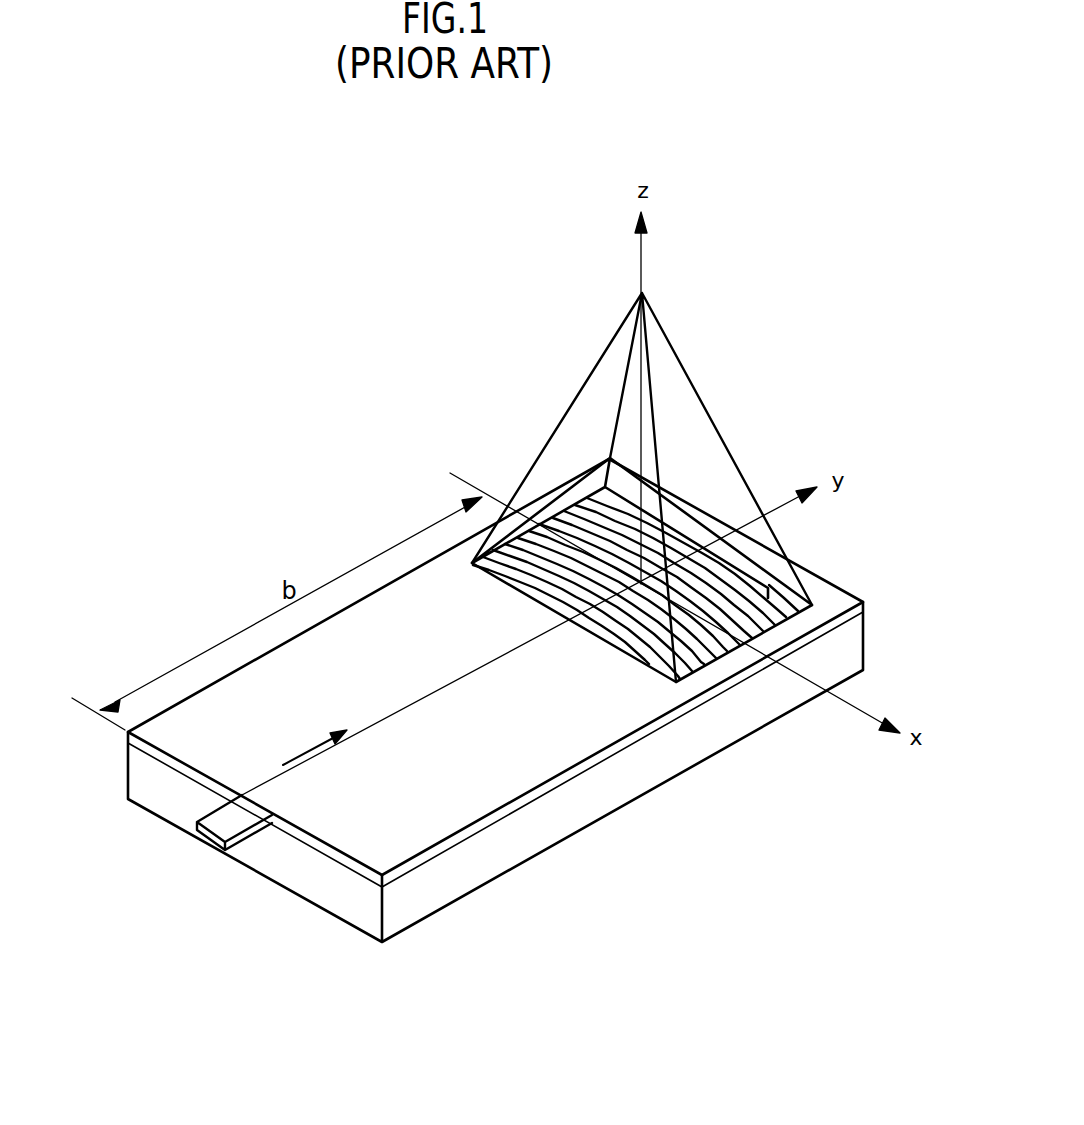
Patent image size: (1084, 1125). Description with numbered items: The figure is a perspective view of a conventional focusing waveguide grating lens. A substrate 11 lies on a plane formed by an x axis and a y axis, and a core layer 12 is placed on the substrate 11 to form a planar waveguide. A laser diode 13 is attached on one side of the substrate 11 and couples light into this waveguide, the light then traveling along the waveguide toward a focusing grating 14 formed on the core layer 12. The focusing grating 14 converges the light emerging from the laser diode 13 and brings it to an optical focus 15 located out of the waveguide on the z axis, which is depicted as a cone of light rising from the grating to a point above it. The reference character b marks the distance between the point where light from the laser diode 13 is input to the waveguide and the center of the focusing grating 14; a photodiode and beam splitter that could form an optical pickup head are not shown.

The substrate 11 is at (567, 822).
The core layer 12 is at (463, 838).
The laser diode 13 is at (217, 835).
The focusing grating 14 is at (773, 586).
The optical focus 15 is at (642, 293).